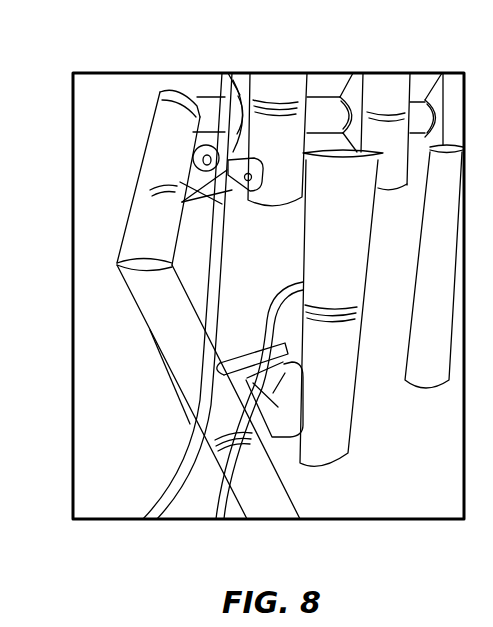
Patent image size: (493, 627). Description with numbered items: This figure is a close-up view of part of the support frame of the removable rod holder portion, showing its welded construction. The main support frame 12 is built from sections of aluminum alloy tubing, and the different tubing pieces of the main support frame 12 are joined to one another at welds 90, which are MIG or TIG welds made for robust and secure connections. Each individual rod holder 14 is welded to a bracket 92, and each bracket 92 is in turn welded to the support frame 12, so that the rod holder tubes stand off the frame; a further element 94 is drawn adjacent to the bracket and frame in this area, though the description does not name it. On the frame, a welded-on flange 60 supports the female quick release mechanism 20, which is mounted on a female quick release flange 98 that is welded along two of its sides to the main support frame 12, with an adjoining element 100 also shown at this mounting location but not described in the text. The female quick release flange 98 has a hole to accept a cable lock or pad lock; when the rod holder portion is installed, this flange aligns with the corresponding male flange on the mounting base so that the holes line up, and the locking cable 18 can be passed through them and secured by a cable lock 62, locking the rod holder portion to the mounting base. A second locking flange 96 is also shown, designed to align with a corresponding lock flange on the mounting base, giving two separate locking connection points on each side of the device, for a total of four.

The main support frame 12 is at (160, 325).
The rod holder 14 is at (282, 83).
The locking cable 18 is at (190, 424).
The female quick release mechanism 20 is at (192, 160).
The welded-on flange 60 is at (205, 342).
The cable lock 62 is at (216, 519).
The welds 90 is at (170, 116).
The bracket 92 is at (242, 82).
The clamp 94 is at (238, 105).
The second locking flange 96 is at (218, 362).
The female quick release flange 98 is at (193, 178).
The pivot boss 100 is at (193, 151).